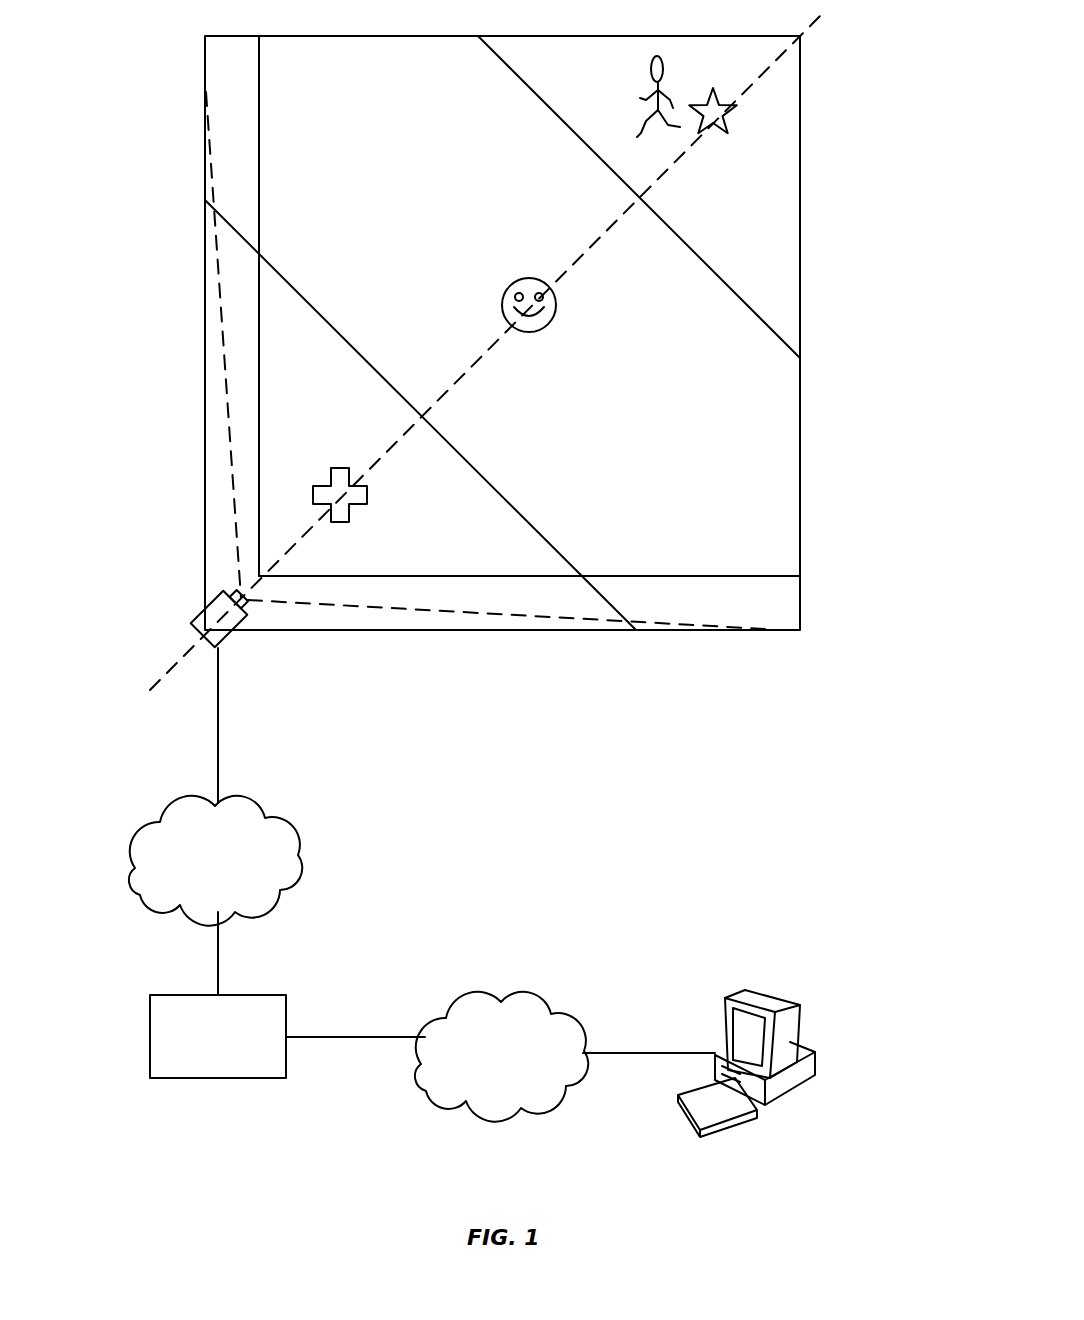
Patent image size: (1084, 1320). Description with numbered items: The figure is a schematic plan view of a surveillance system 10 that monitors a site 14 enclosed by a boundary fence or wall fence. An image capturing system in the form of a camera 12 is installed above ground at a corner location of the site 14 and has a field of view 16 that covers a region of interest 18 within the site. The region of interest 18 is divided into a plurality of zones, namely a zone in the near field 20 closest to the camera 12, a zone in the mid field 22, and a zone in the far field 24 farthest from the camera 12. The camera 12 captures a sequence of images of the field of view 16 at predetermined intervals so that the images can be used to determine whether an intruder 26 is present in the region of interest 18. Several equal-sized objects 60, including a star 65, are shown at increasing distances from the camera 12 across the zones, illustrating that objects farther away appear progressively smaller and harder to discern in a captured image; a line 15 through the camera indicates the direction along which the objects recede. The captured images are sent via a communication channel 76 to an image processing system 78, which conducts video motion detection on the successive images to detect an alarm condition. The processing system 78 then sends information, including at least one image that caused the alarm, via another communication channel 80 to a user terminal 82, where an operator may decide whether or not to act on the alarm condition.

The surveillance system 10 is at (278, 1152).
The camera 12 is at (196, 637).
The site 14 is at (198, 261).
The section line 15 is at (847, 27).
The field of view 16 is at (222, 325).
The region of interest 18 is at (248, 90).
The near field zone 20 is at (400, 540).
The mid field zone 22 is at (714, 450).
The far field zone 24 is at (768, 226).
The intruder 26 is at (650, 55).
The object 60 is at (728, 136).
The star 65 is at (740, 110).
The communication channel 76 is at (215, 861).
The image processing system 78 is at (218, 1036).
The communication channel 80 is at (501, 1057).
The user terminal 82 is at (762, 995).